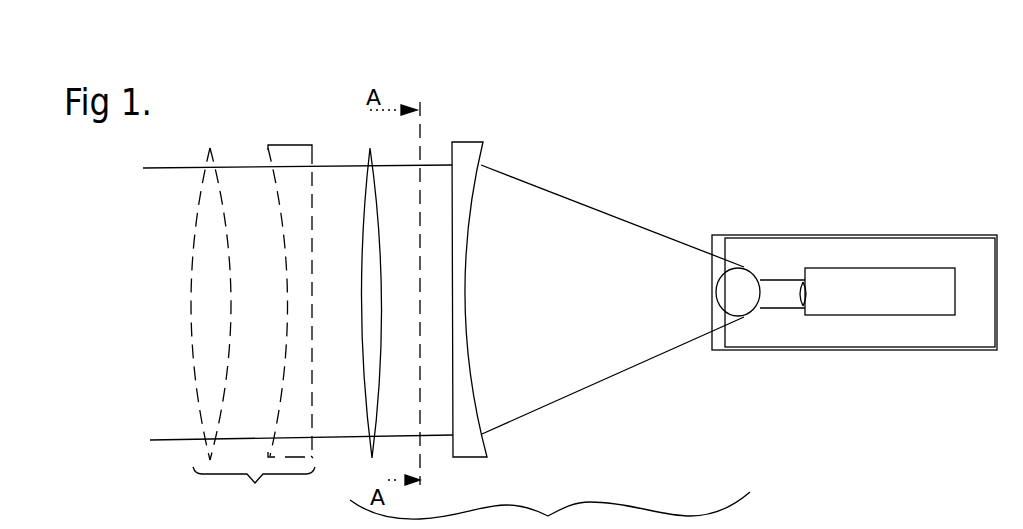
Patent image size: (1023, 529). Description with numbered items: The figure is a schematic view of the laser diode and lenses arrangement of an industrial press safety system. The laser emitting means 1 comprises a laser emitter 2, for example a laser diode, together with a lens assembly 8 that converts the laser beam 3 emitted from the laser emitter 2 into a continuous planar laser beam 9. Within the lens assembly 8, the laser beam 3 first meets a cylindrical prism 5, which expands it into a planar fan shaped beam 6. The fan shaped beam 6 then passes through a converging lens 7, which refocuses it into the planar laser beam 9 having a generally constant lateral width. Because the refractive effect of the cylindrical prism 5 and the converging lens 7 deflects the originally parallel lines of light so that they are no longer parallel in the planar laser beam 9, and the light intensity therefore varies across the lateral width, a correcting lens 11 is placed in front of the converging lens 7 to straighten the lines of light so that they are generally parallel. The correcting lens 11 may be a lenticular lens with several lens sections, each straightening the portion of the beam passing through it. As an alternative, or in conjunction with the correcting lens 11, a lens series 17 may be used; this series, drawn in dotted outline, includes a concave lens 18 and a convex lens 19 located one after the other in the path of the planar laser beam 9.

The laser emitting means 1 is at (684, 205).
The laser emitter 2 is at (892, 287).
The laser beam 3 is at (780, 288).
The cylindrical prism 5 is at (743, 303).
The planar fan shaped beam 6 is at (608, 358).
The converging lens 7 is at (473, 443).
The lens assembly 8 is at (550, 510).
The planar laser beam 9 is at (168, 427).
The correcting lens 11 is at (367, 452).
The lens series 17 is at (254, 490).
The concave lens 18 is at (290, 143).
The convex lens 19 is at (215, 165).